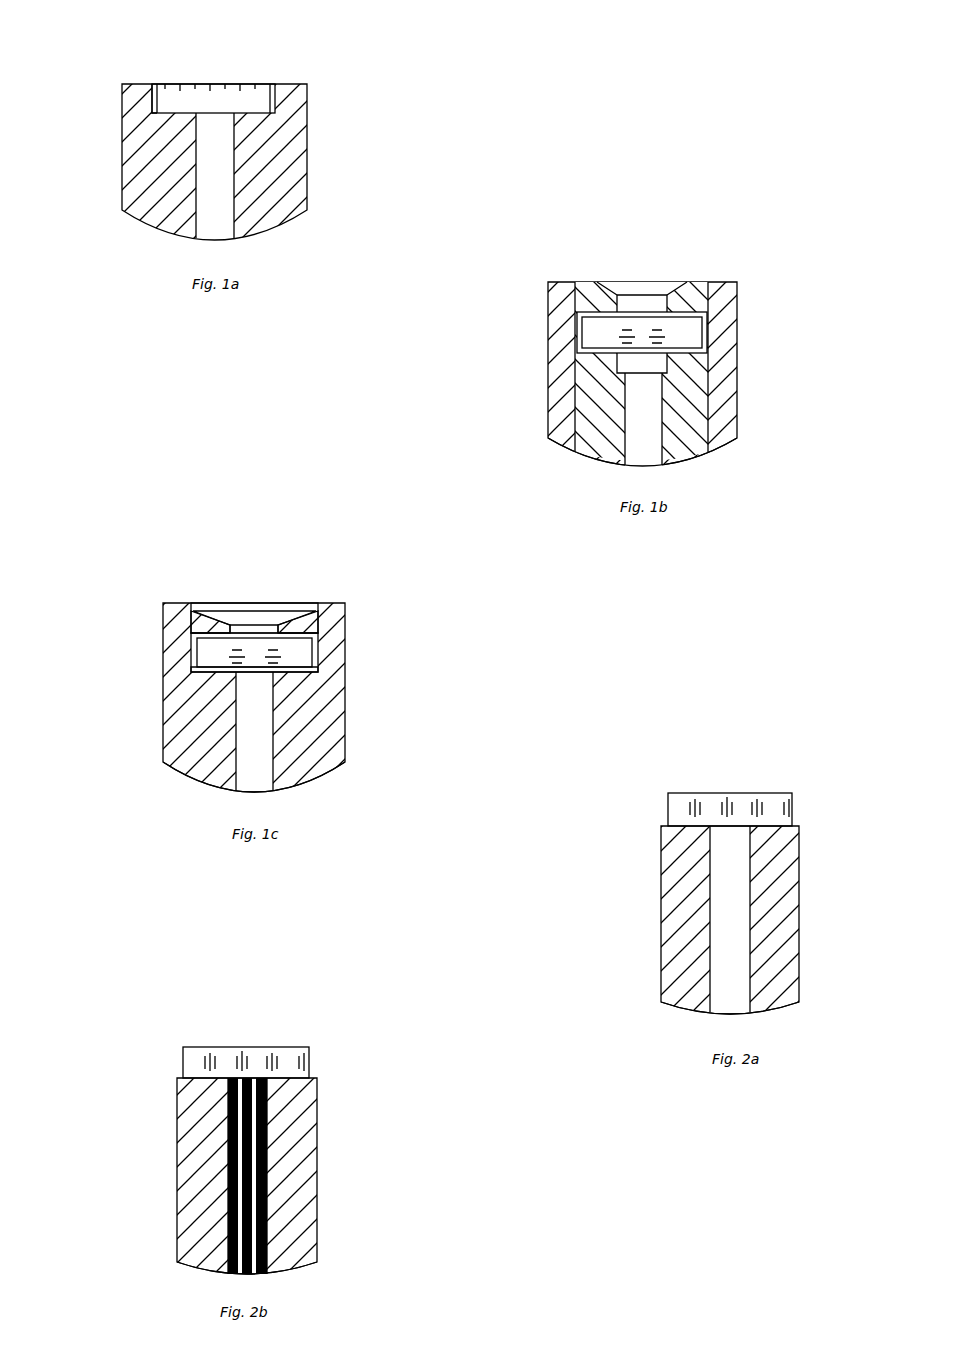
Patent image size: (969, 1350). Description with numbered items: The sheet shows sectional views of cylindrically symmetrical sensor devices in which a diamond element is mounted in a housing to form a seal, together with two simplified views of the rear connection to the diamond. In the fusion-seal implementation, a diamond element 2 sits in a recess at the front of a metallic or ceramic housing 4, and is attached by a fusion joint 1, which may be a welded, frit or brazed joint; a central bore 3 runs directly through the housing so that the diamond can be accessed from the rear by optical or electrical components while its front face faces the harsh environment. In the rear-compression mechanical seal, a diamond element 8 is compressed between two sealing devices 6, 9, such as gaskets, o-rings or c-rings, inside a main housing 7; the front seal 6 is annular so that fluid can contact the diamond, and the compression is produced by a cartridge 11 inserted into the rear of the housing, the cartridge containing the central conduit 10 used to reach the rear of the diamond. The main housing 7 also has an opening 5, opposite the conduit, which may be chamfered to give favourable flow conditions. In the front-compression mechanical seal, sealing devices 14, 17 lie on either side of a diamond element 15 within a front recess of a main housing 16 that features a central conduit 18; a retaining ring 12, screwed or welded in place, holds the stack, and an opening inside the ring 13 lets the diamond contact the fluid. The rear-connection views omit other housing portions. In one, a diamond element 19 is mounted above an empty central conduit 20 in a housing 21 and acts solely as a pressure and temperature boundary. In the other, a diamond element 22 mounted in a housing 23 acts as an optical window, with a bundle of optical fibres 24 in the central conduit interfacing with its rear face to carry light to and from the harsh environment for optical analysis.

In FIG. 1A, the fusion joint 1 is at (153, 96).
In FIG. 1A, the diamond element 2 is at (235, 97).
In FIG. 1A, the central bore 3 is at (211, 222).
In FIG. 1A, the housing 4 is at (278, 172).
In FIG. 1B, the opening 5 is at (643, 297).
In FIG. 1B, the front sealing device 6 is at (599, 311).
In FIG. 1B, the main housing 7 is at (717, 298).
In FIG. 1B, the diamond element 8 is at (688, 337).
In FIG. 1B, the rear sealing device 9 is at (583, 347).
In FIG. 1B, the central conduit 10 is at (642, 417).
In FIG. 1B, the cartridge 11 is at (688, 417).
In FIG. 1C, the retaining ring 12 is at (191, 608).
In FIG. 1C, the opening inside the ring 13 is at (257, 620).
In FIG. 1C, the front sealing device 14 is at (308, 628).
In FIG. 1C, the diamond element 15 is at (210, 650).
In FIG. 1C, the main housing 16 is at (333, 665).
In FIG. 1C, the rear sealing device 17 is at (200, 672).
In FIG. 1C, the central conduit 18 is at (258, 737).
In FIG. 2A, the diamond element 19 is at (727, 810).
In FIG. 2A, the central conduit 20 is at (728, 902).
In FIG. 2A, the housing 21 is at (775, 930).
In FIG. 2B, the diamond element 22 is at (245, 1060).
In FIG. 2B, the housing 23 is at (293, 1130).
In FIG. 2B, the optical fibres 24 is at (232, 1172).